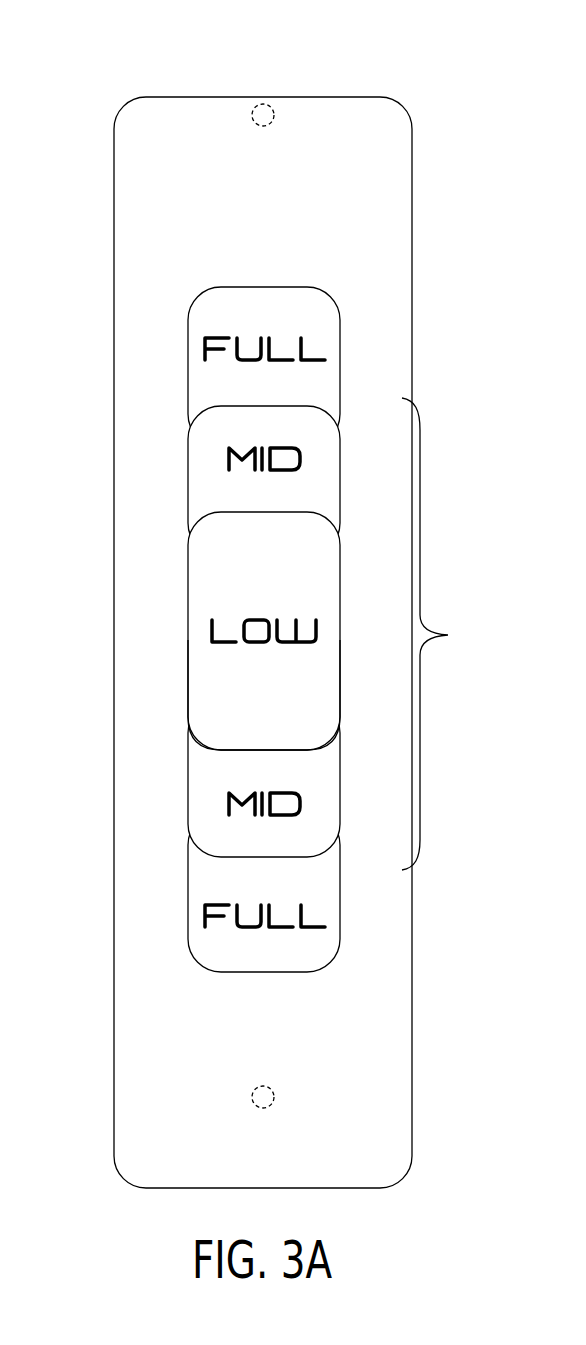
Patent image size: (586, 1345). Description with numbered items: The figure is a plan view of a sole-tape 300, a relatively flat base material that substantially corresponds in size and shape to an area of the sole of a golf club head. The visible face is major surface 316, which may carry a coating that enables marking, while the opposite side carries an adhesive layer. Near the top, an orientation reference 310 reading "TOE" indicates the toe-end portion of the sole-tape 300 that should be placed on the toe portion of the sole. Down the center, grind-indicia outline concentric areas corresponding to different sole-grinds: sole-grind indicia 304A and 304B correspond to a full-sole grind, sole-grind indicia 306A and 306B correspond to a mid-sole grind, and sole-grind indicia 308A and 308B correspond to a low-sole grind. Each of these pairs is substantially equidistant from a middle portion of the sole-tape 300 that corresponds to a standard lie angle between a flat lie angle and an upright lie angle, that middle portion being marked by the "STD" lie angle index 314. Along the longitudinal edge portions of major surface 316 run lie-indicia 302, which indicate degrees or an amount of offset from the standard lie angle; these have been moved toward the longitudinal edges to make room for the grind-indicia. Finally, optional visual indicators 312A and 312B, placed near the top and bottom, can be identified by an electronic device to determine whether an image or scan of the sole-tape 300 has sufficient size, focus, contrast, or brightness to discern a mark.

The sole-tape 300 is at (266, 597).
The lie-indicia 302 is at (420, 633).
The sole-grind indicia 304A is at (342, 298).
The sole-grind indicia 304B is at (200, 963).
The sole-grind indicia 306A is at (212, 408).
The sole-grind indicia 306B is at (200, 847).
The sole-grind indicia 308A is at (203, 517).
The sole-grind indicia 308B is at (202, 742).
The orientation reference 310 is at (322, 153).
The visual indicator 312A is at (267, 102).
The visual indicator 312B is at (262, 1108).
The lie angle index 314 is at (120, 623).
The major surface 316 is at (402, 218).